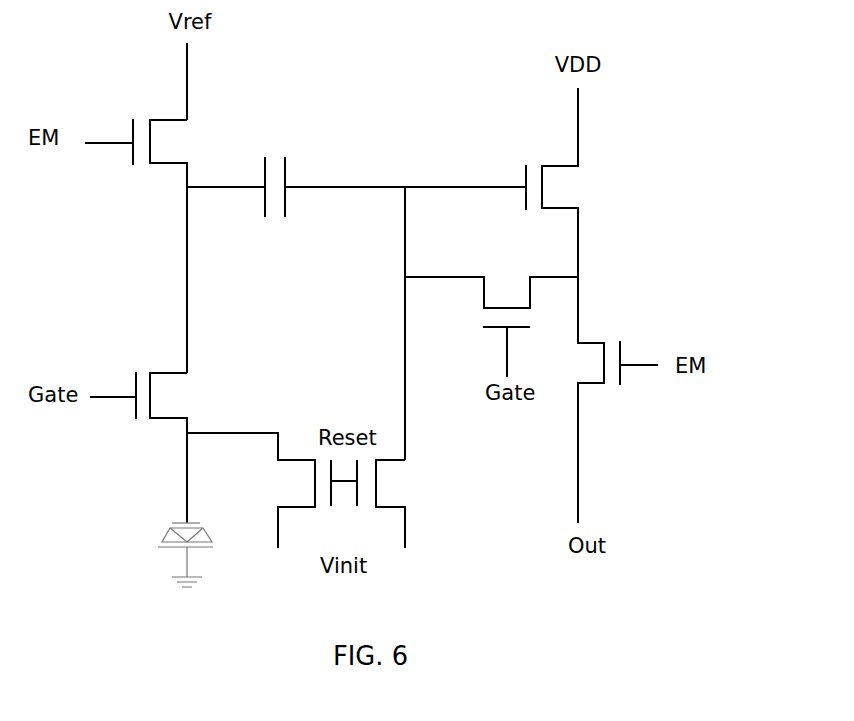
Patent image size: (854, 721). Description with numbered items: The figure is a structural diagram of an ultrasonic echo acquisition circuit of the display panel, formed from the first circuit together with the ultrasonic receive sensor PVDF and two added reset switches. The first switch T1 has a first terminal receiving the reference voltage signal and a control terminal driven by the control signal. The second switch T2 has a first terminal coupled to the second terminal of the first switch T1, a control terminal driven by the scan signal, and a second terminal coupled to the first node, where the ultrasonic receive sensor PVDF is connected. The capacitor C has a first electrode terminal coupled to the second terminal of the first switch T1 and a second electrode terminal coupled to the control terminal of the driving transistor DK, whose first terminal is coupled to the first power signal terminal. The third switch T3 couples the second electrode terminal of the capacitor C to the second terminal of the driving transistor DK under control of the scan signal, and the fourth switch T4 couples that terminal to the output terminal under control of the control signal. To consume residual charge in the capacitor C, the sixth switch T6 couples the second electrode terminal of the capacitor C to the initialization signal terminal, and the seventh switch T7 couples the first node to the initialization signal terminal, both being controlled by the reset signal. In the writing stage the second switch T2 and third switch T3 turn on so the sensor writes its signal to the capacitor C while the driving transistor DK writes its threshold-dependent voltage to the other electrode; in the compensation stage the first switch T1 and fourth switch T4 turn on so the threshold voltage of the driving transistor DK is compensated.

The first switch T1 is at (136, 161).
The second switch T2 is at (138, 447).
The third switch T3 is at (491, 327).
The fourth switch T4 is at (618, 400).
The sixth switch T6 is at (399, 504).
The seventh switch T7 is at (272, 490).
The capacitor C is at (335, 168).
The driving transistor DK is at (576, 182).
The ultrasonic receive sensor PVDF is at (150, 555).